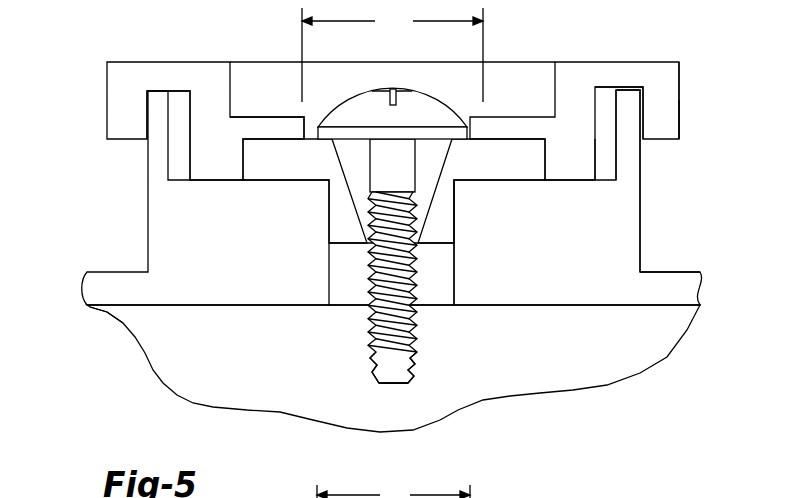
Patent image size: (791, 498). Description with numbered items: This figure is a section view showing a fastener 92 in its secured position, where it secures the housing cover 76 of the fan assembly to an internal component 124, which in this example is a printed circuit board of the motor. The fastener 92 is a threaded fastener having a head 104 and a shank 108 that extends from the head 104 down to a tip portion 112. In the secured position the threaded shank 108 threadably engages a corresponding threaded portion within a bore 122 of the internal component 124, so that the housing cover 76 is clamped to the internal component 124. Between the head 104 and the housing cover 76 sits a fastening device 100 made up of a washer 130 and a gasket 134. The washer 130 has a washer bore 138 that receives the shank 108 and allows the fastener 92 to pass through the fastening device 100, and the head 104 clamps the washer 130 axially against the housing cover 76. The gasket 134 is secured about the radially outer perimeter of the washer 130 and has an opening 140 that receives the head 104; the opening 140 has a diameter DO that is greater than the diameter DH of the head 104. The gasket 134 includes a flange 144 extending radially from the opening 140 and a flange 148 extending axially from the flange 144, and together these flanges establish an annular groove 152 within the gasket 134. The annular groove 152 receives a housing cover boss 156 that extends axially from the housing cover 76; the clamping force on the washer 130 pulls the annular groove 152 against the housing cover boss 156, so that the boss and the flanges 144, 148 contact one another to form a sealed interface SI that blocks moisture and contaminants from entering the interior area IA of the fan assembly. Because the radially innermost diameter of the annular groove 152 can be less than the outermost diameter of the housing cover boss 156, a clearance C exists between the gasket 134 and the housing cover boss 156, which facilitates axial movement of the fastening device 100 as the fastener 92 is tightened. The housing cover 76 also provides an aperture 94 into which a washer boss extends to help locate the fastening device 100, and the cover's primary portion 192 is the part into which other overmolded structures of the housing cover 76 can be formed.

The housing cover 76 is at (608, 233).
The fastener 92 is at (369, 92).
The aperture 94 is at (454, 268).
The fastening device 100 is at (146, 62).
The head 104 is at (414, 95).
The shank 108 is at (378, 255).
The tip portion 112 is at (370, 366).
The bore 122 is at (381, 381).
The internal component 124 is at (638, 362).
The washer 130 is at (243, 160).
The gasket 134 is at (679, 80).
The washer bore 138 is at (356, 187).
The opening 140 is at (307, 117).
The flange 144 is at (645, 62).
The flange 148 is at (679, 107).
The annular groove 152 is at (166, 111).
The housing cover boss 156 is at (641, 160).
The primary portion 192 is at (685, 272).
The sealed interface SI is at (708, 130).
The clearance C is at (604, 160).
The interior area IA is at (142, 384).
The diameter of the opening DO is at (392, 55).
The diameter of the head DH is at (393, 489).